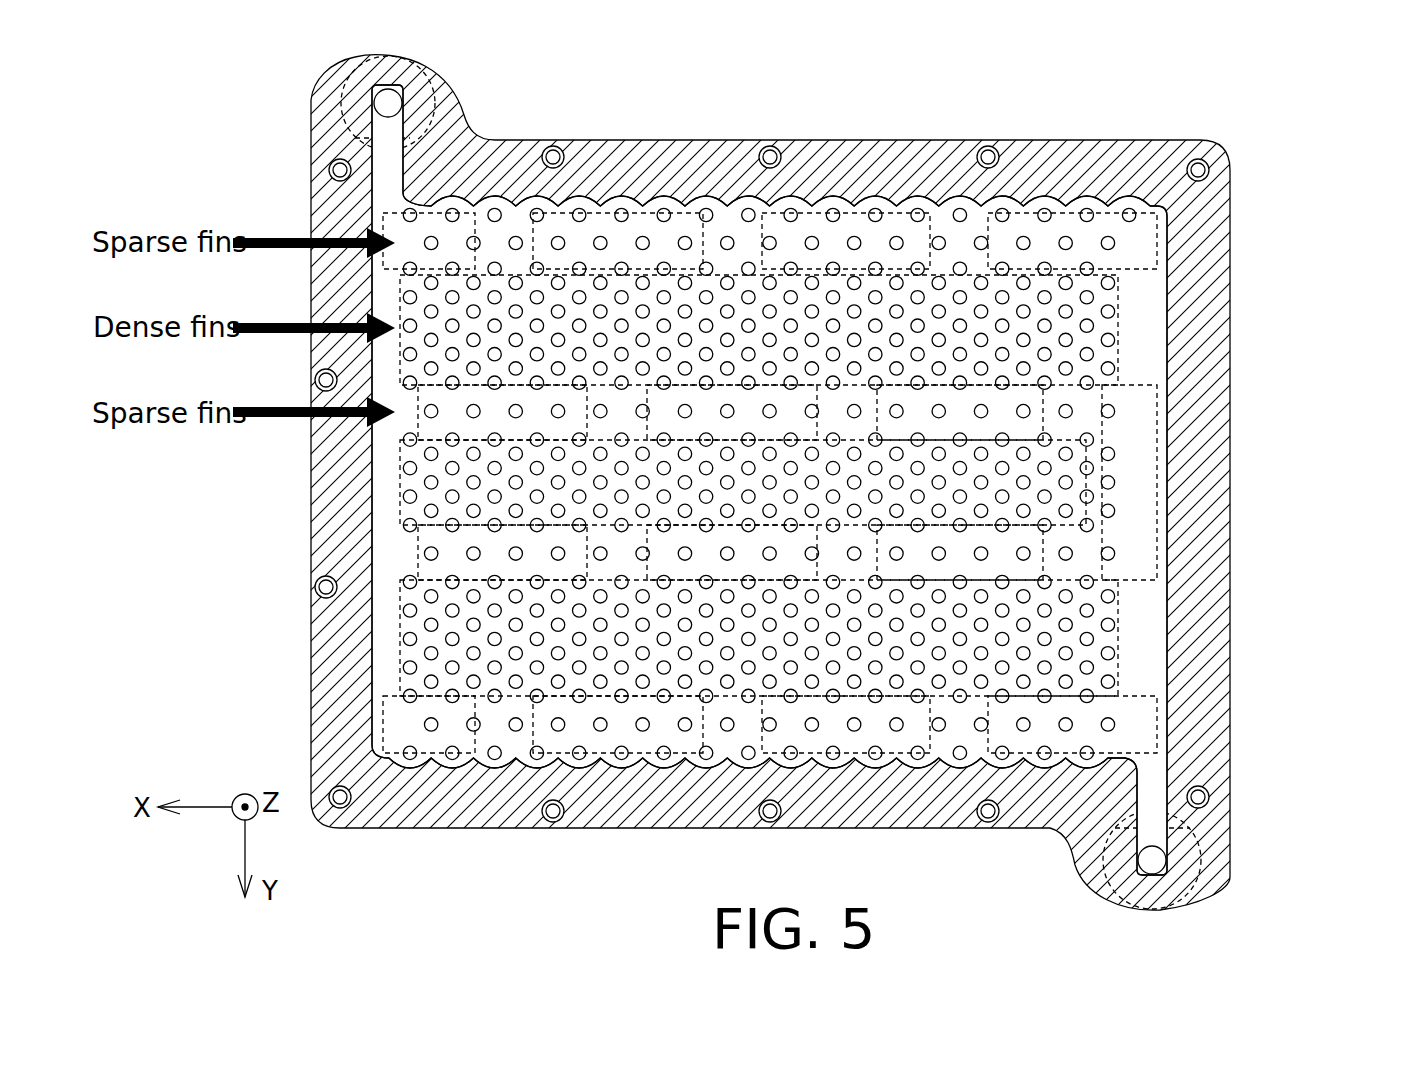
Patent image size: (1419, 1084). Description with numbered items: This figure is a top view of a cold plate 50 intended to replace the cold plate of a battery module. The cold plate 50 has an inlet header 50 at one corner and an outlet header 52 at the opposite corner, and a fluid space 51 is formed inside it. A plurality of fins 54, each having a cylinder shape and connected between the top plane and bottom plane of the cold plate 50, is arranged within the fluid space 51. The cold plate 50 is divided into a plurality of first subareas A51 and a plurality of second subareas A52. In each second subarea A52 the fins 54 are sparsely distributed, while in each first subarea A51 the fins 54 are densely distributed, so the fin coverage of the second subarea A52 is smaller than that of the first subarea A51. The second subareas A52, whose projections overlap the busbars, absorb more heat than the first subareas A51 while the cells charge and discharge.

The cold plate 50 is at (386, 104).
The fluid space 51 is at (1145, 655).
The outlet header 52 is at (1152, 860).
The fins 54 is at (1067, 413).
The first subarea A51 is at (1120, 322).
The second subarea A52 is at (1160, 240).